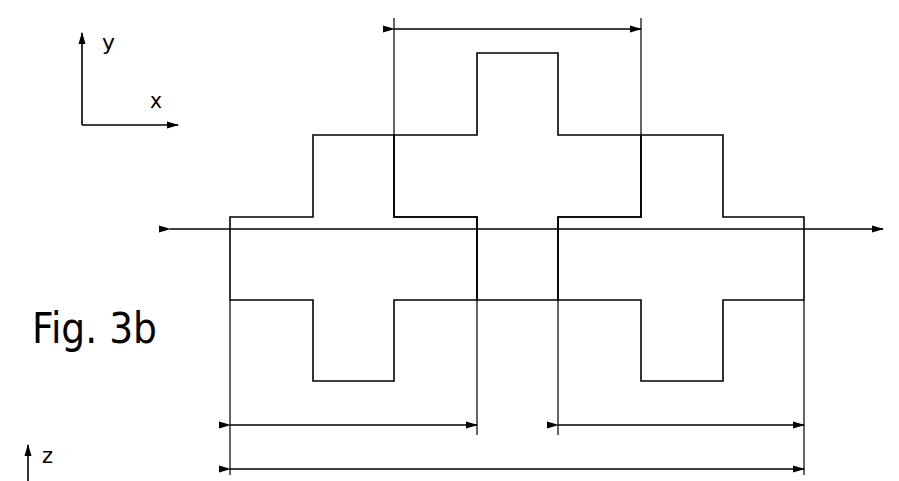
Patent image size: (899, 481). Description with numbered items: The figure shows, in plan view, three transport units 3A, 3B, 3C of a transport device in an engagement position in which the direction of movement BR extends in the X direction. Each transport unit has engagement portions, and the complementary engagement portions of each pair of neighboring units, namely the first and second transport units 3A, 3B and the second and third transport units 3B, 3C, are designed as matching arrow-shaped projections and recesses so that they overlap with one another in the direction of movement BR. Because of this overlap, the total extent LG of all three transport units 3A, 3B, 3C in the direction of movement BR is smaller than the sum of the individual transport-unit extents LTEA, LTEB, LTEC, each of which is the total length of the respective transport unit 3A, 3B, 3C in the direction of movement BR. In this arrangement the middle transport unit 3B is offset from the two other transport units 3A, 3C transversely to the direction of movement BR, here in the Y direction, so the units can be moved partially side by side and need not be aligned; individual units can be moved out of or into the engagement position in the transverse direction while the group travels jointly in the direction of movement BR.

The transport unit 3A is at (393, 270).
The transport unit 3B is at (504, 172).
The transport unit 3C is at (673, 280).
The direction of movement BR is at (526, 211).
The transport-unit extent LTEA is at (353, 387).
The transport-unit extent LTEB is at (517, 67).
The transport-unit extent LTEC is at (681, 387).
The total extent LG is at (517, 454).